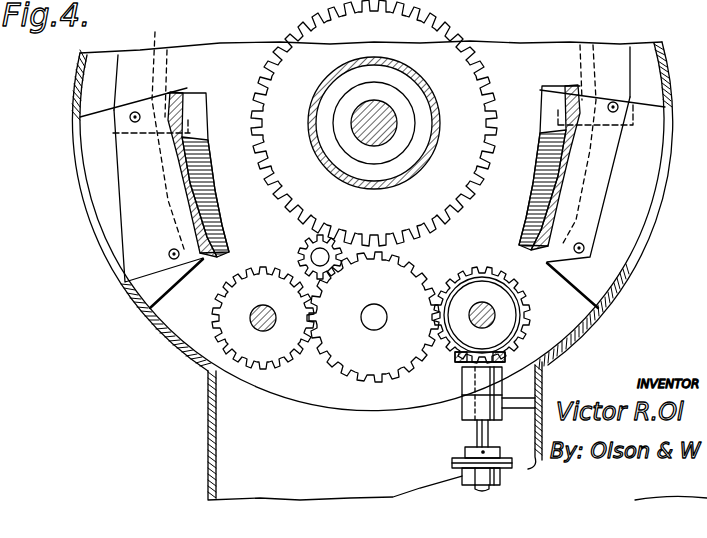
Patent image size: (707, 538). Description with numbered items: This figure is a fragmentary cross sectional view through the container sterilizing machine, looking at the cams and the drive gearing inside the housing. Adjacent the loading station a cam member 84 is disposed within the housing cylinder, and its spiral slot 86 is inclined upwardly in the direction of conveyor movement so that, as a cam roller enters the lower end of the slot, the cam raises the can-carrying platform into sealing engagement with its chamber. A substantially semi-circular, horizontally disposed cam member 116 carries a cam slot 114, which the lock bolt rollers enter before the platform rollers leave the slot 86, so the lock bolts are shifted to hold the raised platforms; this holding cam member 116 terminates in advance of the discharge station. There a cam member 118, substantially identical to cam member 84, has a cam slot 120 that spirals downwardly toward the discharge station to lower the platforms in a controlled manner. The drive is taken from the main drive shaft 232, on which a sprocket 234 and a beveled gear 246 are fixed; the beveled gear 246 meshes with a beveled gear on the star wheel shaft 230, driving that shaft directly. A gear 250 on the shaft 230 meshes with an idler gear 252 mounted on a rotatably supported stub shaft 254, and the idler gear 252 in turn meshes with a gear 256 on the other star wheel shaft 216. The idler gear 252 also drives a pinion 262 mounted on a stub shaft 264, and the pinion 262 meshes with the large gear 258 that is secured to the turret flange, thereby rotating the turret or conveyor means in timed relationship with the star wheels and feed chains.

The cam slot 114 is at (192, 29).
The cam member 116 is at (113, 83).
The cam member 84 is at (150, 178).
The spiral slot 86 is at (214, 178).
The cam member 118 is at (607, 203).
The cam slot 120 is at (567, 215).
The shaft 216 is at (213, 357).
The large gear 258 is at (483, 110).
The pinion 262 is at (305, 245).
The stub shaft 264 is at (324, 257).
The gear 256 is at (258, 327).
The stub shaft 254 is at (368, 325).
The idler gear 252 is at (353, 378).
The gear 250 is at (445, 285).
The star wheel shaft 230 is at (497, 317).
The beveled gear 246 is at (505, 367).
The main drive shaft 232 is at (477, 433).
The sprocket 234 is at (452, 465).